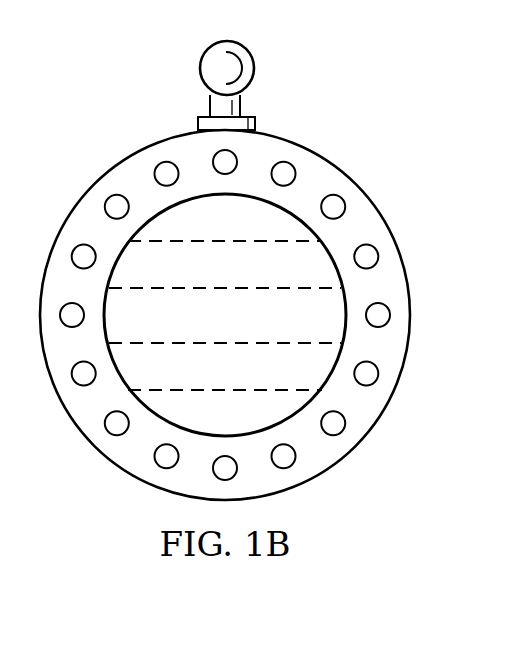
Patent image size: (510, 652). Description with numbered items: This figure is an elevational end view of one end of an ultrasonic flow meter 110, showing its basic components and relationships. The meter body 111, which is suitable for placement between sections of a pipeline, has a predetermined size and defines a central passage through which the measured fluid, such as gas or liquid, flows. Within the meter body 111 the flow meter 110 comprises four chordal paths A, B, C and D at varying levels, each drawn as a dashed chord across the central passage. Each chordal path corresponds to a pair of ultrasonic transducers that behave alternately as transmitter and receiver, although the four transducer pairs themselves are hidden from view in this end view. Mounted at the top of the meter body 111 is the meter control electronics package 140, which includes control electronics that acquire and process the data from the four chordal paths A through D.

The ultrasonic flow meter 110 is at (225, 257).
The meter body 111 is at (340, 176).
The meter control electronics package 140 is at (256, 70).